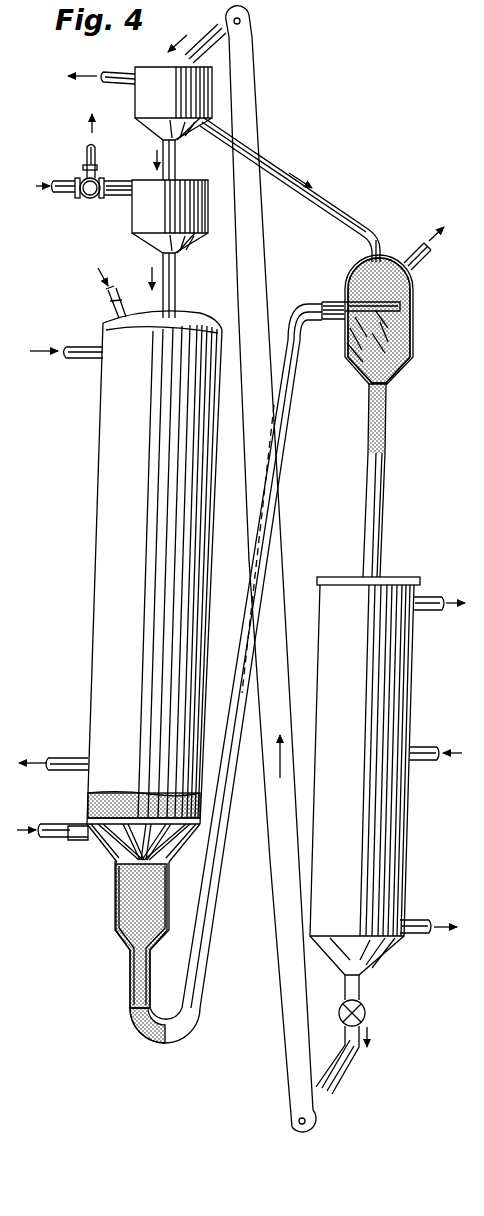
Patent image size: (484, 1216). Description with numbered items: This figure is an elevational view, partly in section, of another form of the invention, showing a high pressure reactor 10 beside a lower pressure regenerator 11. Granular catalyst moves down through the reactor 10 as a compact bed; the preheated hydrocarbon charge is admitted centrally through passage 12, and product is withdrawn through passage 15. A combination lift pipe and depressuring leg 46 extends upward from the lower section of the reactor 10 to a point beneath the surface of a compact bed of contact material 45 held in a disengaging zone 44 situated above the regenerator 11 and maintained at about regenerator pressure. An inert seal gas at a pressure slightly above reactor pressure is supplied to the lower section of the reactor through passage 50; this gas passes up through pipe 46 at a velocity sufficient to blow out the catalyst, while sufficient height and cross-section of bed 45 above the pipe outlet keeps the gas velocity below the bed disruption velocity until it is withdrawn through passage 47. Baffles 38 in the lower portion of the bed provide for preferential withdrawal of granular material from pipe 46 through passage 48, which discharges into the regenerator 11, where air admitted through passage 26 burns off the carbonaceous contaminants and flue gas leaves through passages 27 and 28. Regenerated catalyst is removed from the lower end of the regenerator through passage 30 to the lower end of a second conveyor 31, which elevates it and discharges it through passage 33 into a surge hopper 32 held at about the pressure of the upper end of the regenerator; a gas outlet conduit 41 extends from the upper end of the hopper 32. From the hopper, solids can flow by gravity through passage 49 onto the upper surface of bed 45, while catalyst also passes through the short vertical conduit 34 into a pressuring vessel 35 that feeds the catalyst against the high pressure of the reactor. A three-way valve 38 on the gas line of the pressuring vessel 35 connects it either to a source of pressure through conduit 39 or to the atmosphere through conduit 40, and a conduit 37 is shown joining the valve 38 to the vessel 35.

The reactor 10 is at (103, 527).
The regenerator 11 is at (399, 700).
The passage 12 is at (84, 362).
The passage 15 is at (63, 757).
The passage 26 is at (430, 761).
The passage 27 is at (436, 611).
The passage 28 is at (416, 937).
The passage 30 is at (349, 1077).
The second conveyor 31 is at (255, 263).
The supply hopper 32 is at (173, 103).
The passage 33 is at (210, 33).
The conduit 34 is at (177, 170).
The pressuring vessel 35 is at (170, 249).
The conduit 37 is at (123, 171).
The three-way valve 38 is at (90, 198).
The conduit 39 is at (67, 195).
The conduit 40 is at (87, 152).
The gas outlet conduit 41 is at (115, 72).
The disengaging zone 44 is at (344, 287).
The bed of contact material 45 is at (402, 304).
The combination lift pipe and depressuring leg 46 is at (205, 953).
The passage 47 is at (411, 248).
The passage 48 is at (374, 518).
The passage 49 is at (319, 207).
The passage 50 is at (49, 840).